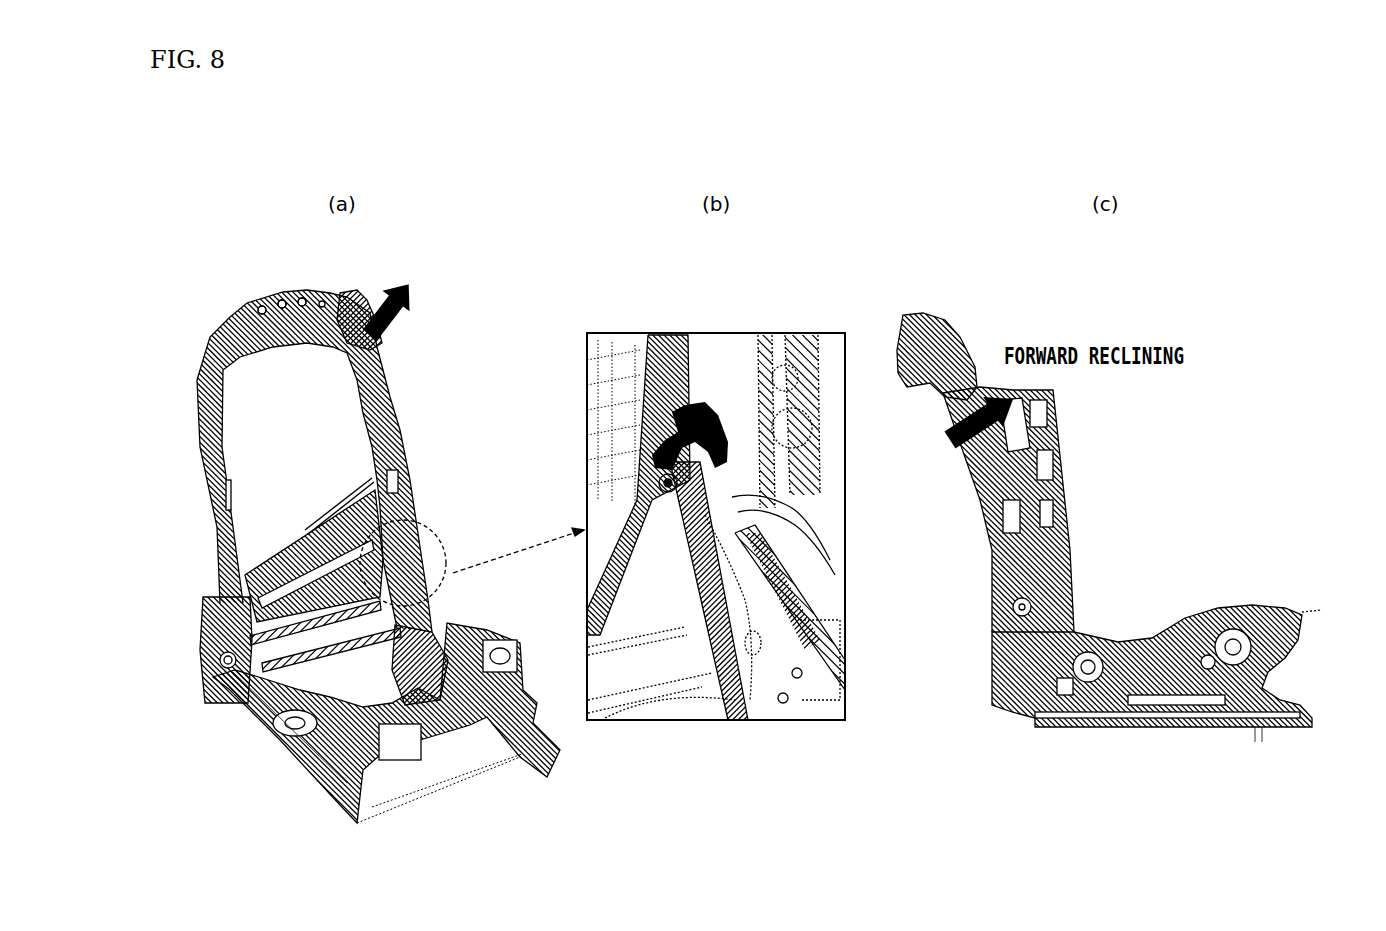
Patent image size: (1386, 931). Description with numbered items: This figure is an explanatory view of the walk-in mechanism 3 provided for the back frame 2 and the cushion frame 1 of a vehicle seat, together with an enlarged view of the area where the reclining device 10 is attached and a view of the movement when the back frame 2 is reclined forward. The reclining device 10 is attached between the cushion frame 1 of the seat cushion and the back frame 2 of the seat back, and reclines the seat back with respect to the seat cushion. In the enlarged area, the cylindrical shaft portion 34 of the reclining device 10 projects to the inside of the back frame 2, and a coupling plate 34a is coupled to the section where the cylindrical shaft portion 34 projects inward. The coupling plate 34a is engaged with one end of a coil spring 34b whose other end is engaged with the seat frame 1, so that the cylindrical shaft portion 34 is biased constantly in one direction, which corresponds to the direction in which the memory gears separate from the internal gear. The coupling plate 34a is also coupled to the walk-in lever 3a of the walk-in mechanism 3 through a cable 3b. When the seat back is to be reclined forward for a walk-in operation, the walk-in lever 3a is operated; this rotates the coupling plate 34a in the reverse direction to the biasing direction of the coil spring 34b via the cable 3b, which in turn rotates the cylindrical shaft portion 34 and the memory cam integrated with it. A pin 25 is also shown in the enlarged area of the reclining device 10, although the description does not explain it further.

The cushion frame 1 is at (458, 627).
The back frame 2 is at (398, 422).
The walk-in mechanism 3 is at (368, 294).
The walk-in lever 3a is at (410, 300).
The cable 3b is at (340, 507).
The reclining device 10 is at (206, 598).
The pin 25 is at (664, 490).
The cylindrical shaft portion 34 is at (663, 408).
The coupling plate 34a is at (681, 495).
The coil spring 34b is at (772, 530).